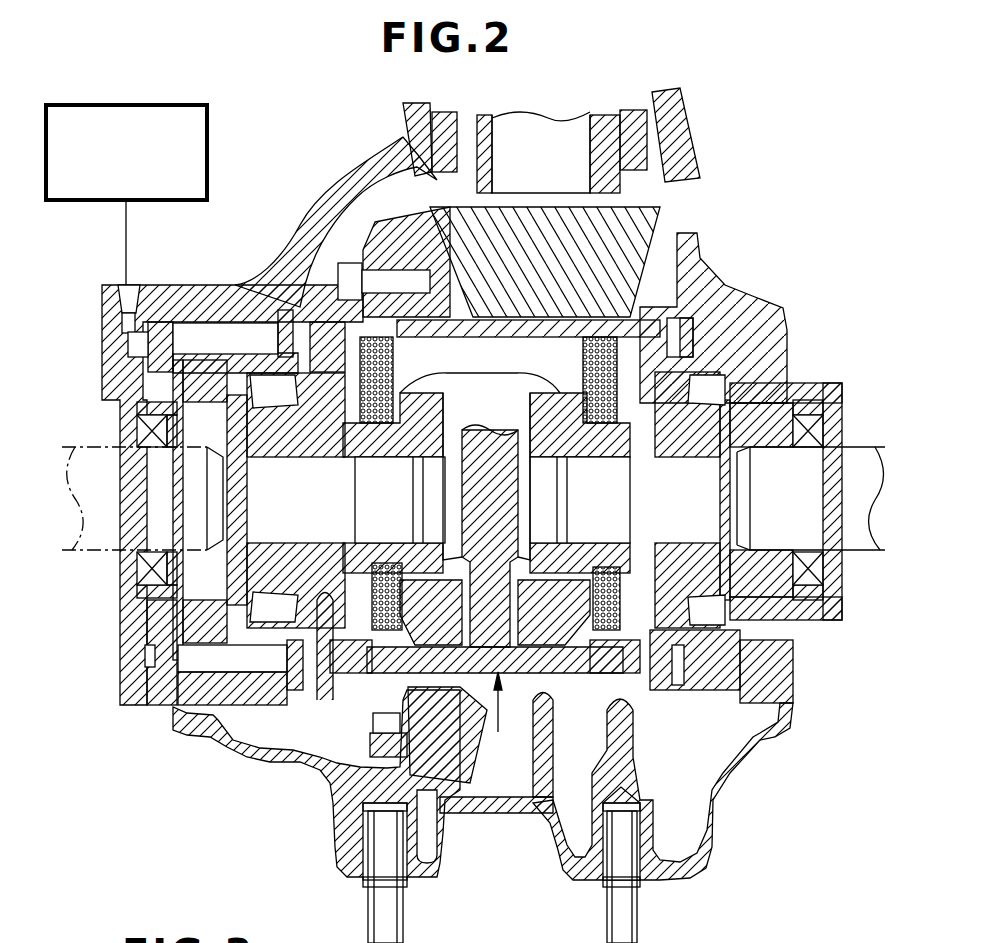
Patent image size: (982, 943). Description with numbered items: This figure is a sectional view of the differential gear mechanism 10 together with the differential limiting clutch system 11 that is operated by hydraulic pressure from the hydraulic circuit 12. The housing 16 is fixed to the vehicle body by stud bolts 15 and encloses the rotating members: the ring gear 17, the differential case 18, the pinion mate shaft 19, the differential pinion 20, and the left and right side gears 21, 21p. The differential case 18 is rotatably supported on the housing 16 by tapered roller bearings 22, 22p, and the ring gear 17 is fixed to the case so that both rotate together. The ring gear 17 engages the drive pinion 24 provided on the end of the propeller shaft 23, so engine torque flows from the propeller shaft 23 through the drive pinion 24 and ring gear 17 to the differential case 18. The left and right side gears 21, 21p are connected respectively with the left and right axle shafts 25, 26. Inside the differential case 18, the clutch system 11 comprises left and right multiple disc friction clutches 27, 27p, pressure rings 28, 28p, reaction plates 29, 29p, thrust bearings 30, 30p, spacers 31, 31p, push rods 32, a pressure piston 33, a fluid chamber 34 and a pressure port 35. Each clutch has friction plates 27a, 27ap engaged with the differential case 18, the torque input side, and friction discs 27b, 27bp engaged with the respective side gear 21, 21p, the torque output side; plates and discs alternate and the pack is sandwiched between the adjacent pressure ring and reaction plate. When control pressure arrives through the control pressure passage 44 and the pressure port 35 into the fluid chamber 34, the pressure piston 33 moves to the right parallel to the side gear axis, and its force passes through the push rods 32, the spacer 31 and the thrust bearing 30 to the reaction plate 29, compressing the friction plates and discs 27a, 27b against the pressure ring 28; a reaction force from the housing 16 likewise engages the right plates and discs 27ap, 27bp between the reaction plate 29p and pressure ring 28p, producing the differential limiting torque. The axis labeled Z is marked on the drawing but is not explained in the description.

The differential gear mechanism 10 is at (517, 310).
The differential limiting clutch system 11 is at (340, 292).
The hydraulic circuit 12 is at (207, 180).
The stud bolts 15 is at (370, 924).
The housing 16 is at (403, 143).
The ring gear 17 is at (370, 173).
The differential case 18 is at (612, 650).
The pinion mate shaft 19 is at (510, 665).
The differential pinion 20 is at (512, 667).
The left side gear 21 is at (402, 448).
The right side gear 21p is at (593, 450).
The tapered roller bearing 22 is at (277, 408).
The tapered roller bearing 22p is at (740, 400).
The propeller shaft 23 is at (527, 122).
The drive pinion 24 is at (662, 227).
The left axle shaft 25 is at (103, 445).
The right axle shaft 26 is at (872, 552).
The left multiple disc friction clutch 27 is at (303, 303).
The right multiple disc friction clutch 27p is at (680, 300).
The friction plates 27a is at (383, 662).
The friction plates 27ap is at (607, 672).
The friction discs 27b is at (400, 692).
The friction discs 27bp is at (593, 667).
The pressure ring 28 is at (418, 343).
The pressure ring 28p is at (675, 183).
The reaction plate 29 is at (330, 440).
The reaction plate 29p is at (650, 447).
The thrust bearing 30 is at (300, 678).
The thrust bearing 30p is at (683, 673).
The spacer 31 is at (253, 683).
The spacer 31p is at (697, 662).
The push rods 32 is at (188, 338).
The pressure piston 33 is at (133, 350).
The fluid chamber 34 is at (145, 660).
The pressure port 35 is at (124, 290).
The control pressure passage 44 is at (126, 213).
The axis Z is at (496, 719).